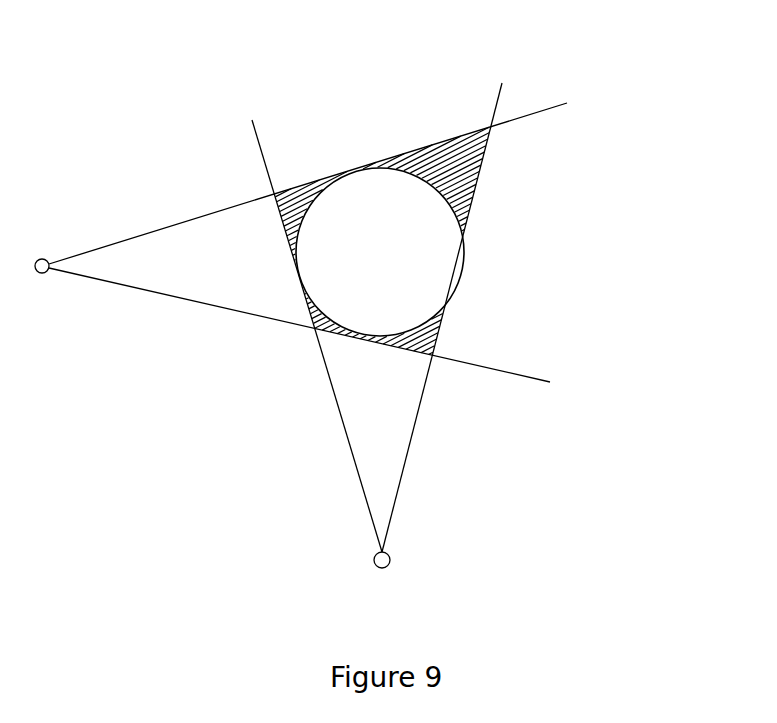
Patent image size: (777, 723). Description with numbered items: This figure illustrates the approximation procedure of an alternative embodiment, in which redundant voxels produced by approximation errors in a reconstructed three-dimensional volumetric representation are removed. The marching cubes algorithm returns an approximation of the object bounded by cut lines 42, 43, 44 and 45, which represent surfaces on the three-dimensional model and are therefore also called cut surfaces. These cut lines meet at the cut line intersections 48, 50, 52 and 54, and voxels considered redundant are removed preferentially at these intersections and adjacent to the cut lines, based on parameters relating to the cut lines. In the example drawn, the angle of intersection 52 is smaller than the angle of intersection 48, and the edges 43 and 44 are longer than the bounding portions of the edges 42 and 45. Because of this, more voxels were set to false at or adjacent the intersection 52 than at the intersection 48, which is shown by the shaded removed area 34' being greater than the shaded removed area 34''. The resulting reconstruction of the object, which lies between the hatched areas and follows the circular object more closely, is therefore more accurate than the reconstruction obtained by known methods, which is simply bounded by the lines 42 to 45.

The cut line 42 is at (272, 224).
The cut line 43 is at (462, 320).
The cut line 44 is at (445, 124).
The cut line 45 is at (391, 358).
The cut line intersection 48 is at (314, 340).
The cut line intersection 50 is at (433, 362).
The cut line intersection 52 is at (493, 128).
The cut line intersection 54 is at (276, 200).
The shaded removed area 34' is at (496, 317).
The shaded removed area 34'' is at (299, 330).